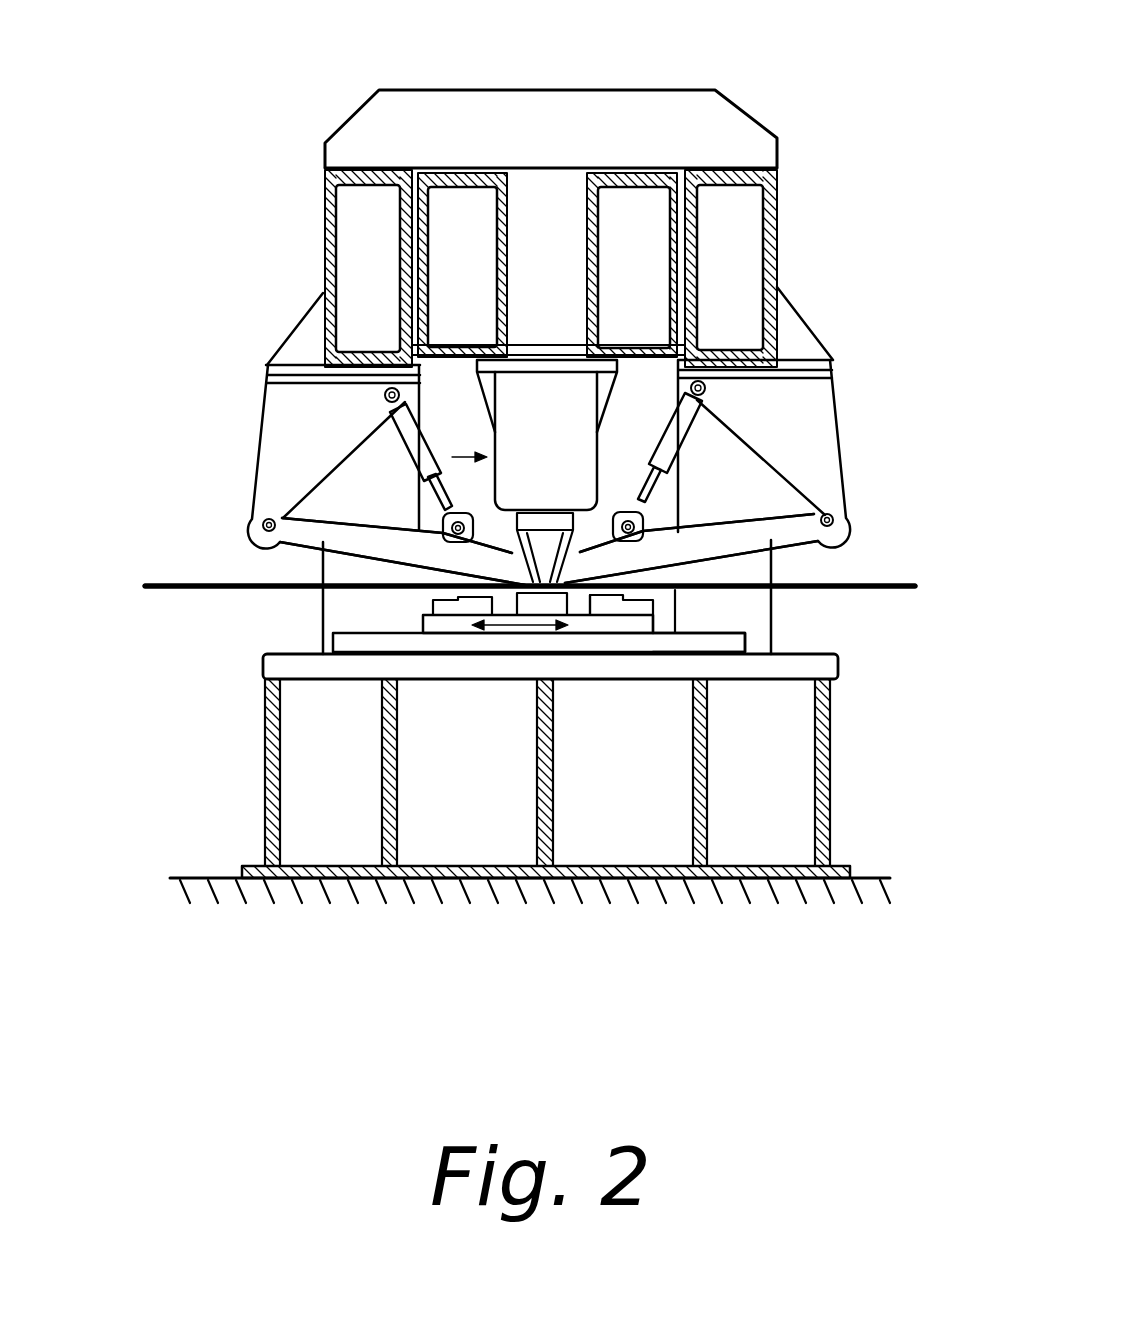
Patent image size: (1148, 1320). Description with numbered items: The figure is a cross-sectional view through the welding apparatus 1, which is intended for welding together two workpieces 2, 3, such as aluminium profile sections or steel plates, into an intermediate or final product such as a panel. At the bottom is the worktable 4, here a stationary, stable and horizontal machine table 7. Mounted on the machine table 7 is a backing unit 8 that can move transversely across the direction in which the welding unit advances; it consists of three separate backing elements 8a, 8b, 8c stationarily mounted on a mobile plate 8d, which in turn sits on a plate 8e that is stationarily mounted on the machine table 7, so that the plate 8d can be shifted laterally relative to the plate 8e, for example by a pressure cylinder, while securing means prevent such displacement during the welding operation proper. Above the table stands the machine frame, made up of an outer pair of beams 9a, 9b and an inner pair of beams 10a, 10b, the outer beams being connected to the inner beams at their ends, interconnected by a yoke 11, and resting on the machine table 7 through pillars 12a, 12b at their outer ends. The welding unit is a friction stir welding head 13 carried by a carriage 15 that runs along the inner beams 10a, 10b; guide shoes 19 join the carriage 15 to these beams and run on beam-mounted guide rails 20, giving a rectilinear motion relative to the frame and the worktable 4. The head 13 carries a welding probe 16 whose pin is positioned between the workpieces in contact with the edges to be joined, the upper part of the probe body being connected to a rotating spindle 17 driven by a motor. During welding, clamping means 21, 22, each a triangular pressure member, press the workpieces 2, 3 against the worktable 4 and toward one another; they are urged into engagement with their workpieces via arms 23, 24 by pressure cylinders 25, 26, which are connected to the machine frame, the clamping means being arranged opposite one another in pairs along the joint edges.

The welding apparatus 1 is at (256, 402).
The workpiece 2 is at (858, 584).
The workpiece 3 is at (175, 583).
The worktable 4 is at (841, 672).
The machine table 7 is at (840, 656).
The backing unit 8 is at (509, 645).
The backing element 8a is at (655, 600).
The backing element 8b is at (575, 592).
The backing element 8c is at (435, 598).
The mobile plate 8d is at (745, 640).
The plate 8e is at (637, 634).
The outer beam 9a is at (737, 253).
The outer beam 9b is at (362, 212).
The inner beam 10a is at (645, 245).
The inner beam 10b is at (443, 213).
The yoke 11 is at (690, 100).
The pillar 12a is at (723, 478).
The pillar 12b is at (367, 487).
The friction stir welding head 13 is at (350, 455).
The carriage 15 is at (562, 350).
The welding probe 16 is at (565, 556).
The rotating spindle 17 is at (580, 447).
The guide shoe 19 is at (477, 350).
The guide rail 20 is at (494, 160).
The clamping means 21 is at (590, 592).
The clamping means 22 is at (433, 658).
The arm 23 is at (800, 548).
The arm 24 is at (340, 540).
The pressure cylinder 25 is at (695, 405).
The pressure cylinder 26 is at (419, 430).